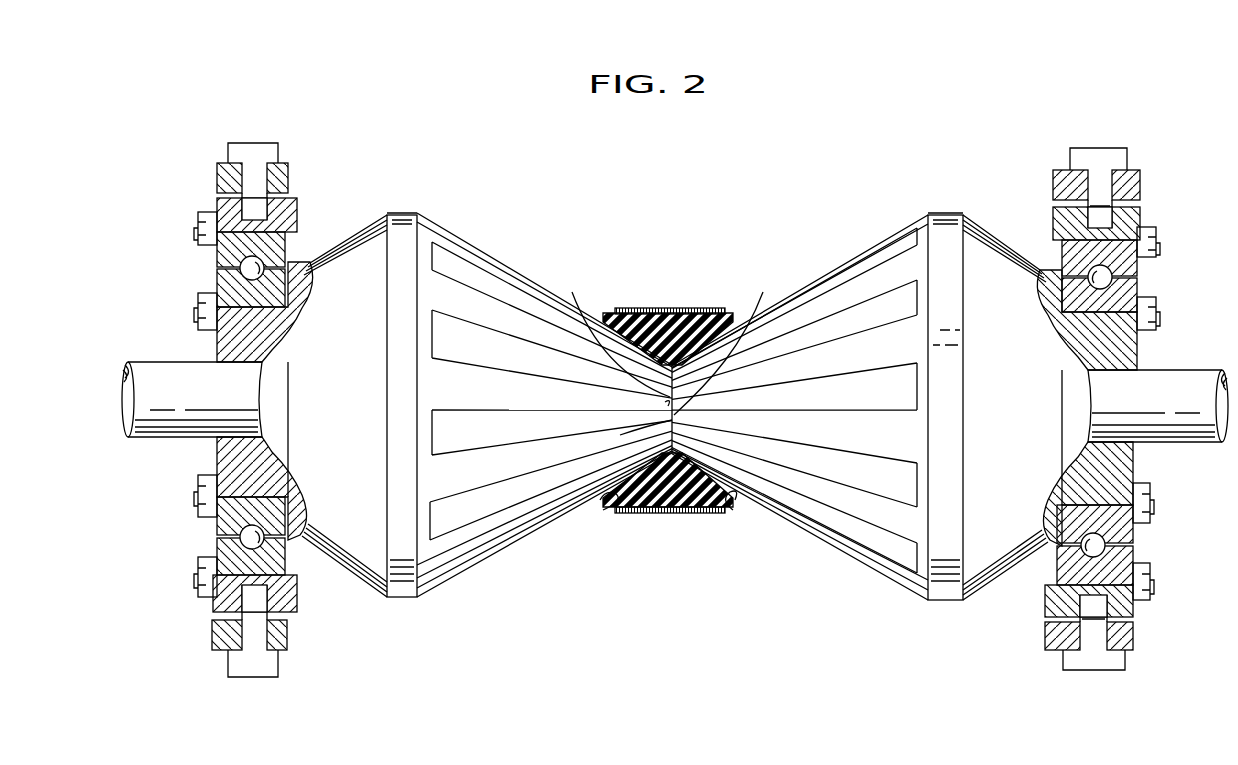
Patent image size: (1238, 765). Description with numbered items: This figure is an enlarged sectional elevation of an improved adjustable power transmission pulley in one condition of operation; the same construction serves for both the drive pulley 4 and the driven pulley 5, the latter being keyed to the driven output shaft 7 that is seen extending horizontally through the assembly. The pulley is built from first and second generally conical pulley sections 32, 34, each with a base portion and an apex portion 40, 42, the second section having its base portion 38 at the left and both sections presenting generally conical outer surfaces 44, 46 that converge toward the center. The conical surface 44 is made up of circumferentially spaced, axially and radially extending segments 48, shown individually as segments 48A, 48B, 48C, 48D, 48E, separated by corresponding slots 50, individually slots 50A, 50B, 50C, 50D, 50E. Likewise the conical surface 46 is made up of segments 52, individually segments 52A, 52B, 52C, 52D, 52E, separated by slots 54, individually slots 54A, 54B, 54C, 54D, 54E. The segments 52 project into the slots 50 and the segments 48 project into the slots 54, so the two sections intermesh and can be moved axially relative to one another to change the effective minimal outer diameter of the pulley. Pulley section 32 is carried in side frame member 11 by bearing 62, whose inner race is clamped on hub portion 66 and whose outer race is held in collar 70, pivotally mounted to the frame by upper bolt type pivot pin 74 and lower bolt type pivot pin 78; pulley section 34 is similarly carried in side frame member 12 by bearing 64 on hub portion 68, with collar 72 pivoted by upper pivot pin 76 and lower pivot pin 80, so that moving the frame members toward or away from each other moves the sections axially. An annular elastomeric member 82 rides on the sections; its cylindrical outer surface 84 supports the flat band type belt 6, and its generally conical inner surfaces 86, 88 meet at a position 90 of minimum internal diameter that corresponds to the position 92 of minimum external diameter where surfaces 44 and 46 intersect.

The adjustable power transmission drive pulley 4 is at (677, 225).
The driven adjustable power transmission pulley 5 is at (613, 226).
The flat band type belt 6 is at (650, 308).
The driven output shaft 7 is at (172, 437).
The side frame member 11 is at (1140, 185).
The side frame member 12 is at (217, 183).
The first generally conical pulley section 32 is at (872, 228).
The second generally conical pulley section 34 is at (468, 218).
The base portion 38 is at (346, 236).
The apex portion 40 is at (724, 336).
The apex portion 42 is at (608, 327).
The generally conical outer surface 44 is at (795, 295).
The generally conical outer surface 46 is at (503, 248).
The segments 48 is at (920, 336).
The segment 48A is at (865, 290).
The segment 48B is at (808, 365).
The segment 48C is at (818, 428).
The segment 48D is at (825, 498).
The segment 48E is at (842, 548).
The slots 50 is at (920, 383).
The slot 50A is at (880, 260).
The slot 50B is at (857, 330).
The slot 50C is at (868, 402).
The slot 50D is at (855, 478).
The slot 50E is at (895, 552).
The segments 52 is at (430, 283).
The segment 52A is at (448, 265).
The segment 52B is at (535, 333).
The segment 52C is at (543, 398).
The segment 52D is at (510, 480).
The segment 52E is at (512, 522).
The slots 54 is at (430, 327).
The slot 54A is at (512, 292).
The slot 54B is at (455, 368).
The slot 54C is at (448, 445).
The slot 54D is at (440, 530).
The slot 54E is at (444, 585).
The bearing 62 is at (1137, 265).
The bearing 64 is at (217, 256).
The hub portion 66 is at (1137, 353).
The hub portion 68 is at (217, 340).
The collar 70 is at (1053, 222).
The collar 72 is at (298, 215).
The upper bolt type pivot pin 74 is at (1127, 150).
The upper bolt type pivot pin 76 is at (276, 148).
The lower bolt type pivot pin 78 is at (1115, 670).
The lower bolt type pivot pin 80 is at (230, 677).
The annular elastomeric member 82 is at (732, 312).
The cylindrical outer surface 84 is at (603, 312).
The generally conical inner surface 86 is at (736, 505).
The generally conical inner surface 88 is at (600, 503).
The position of minimum internal diameter 90 is at (672, 425).
The position of minimum external diameter 92 is at (668, 406).